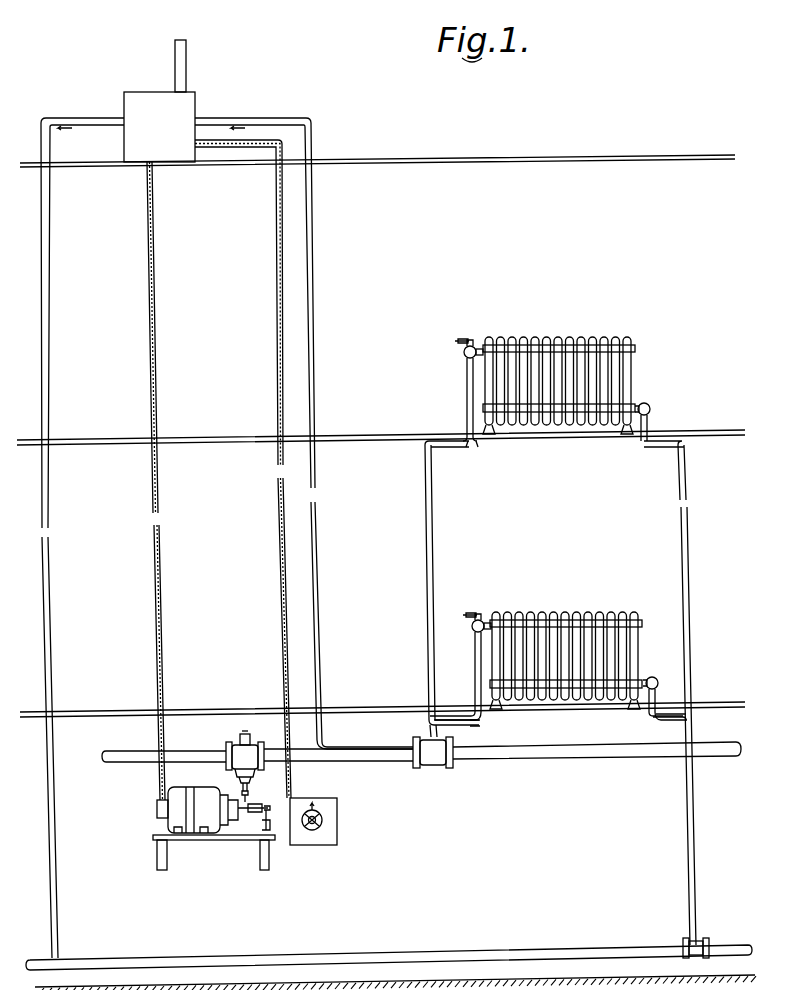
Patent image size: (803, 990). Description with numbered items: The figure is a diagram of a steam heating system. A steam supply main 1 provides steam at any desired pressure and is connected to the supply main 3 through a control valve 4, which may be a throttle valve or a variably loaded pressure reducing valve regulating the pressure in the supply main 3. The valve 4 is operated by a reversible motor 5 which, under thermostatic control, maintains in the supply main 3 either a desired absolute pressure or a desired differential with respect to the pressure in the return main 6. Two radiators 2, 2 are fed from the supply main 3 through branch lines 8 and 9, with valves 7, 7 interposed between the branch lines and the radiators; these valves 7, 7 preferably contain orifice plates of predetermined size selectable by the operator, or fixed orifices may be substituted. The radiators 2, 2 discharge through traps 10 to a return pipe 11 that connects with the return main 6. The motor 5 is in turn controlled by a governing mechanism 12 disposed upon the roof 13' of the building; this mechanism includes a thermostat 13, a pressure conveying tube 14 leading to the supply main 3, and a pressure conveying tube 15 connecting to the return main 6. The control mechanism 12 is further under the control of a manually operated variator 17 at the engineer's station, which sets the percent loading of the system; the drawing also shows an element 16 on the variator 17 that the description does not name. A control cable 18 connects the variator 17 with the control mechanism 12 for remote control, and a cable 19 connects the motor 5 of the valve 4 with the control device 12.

The steam supply main 1 is at (142, 763).
The radiator 2 is at (556, 338).
The supply main 3 is at (396, 760).
The control valve 4 is at (234, 736).
The reversible motor 5 is at (174, 819).
The return main 6 is at (424, 954).
The valve 7 is at (464, 344).
The branch line 8 is at (432, 478).
The branch line 9 is at (480, 723).
The trap 10 is at (648, 404).
The return pipe 11 is at (690, 802).
The governing mechanism 12 is at (210, 100).
The thermostat 13 is at (204, 53).
The roof 13' is at (377, 143).
The pressure conveying tube 14 is at (312, 143).
The pressure conveying tube 15 is at (50, 248).
The dial gauge 16 is at (316, 830).
The manually operated variator 17 is at (344, 822).
The control cable 18 is at (284, 510).
The cable 19 is at (152, 498).